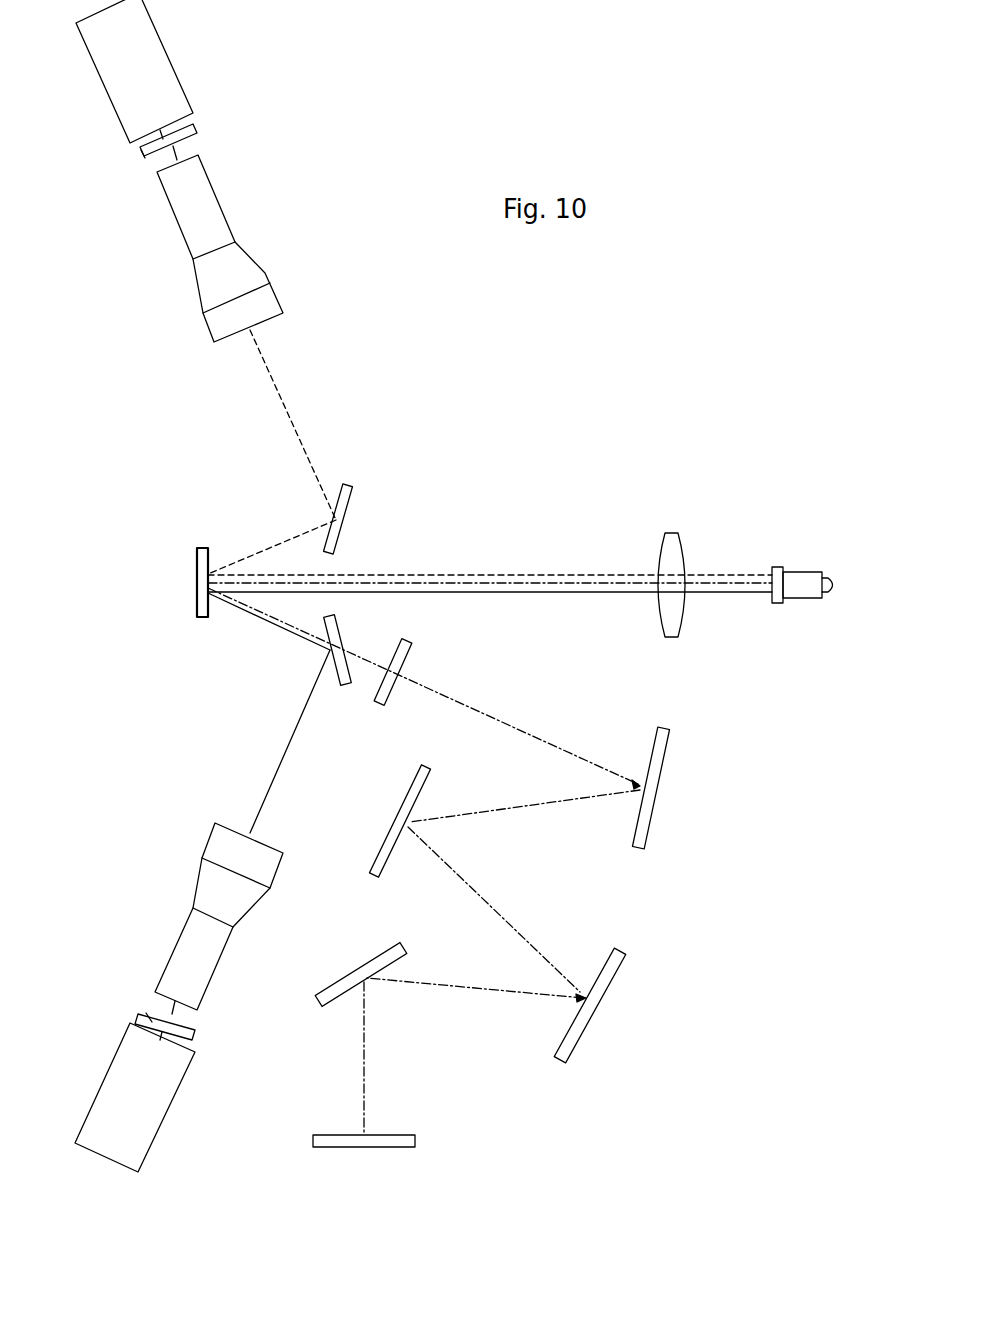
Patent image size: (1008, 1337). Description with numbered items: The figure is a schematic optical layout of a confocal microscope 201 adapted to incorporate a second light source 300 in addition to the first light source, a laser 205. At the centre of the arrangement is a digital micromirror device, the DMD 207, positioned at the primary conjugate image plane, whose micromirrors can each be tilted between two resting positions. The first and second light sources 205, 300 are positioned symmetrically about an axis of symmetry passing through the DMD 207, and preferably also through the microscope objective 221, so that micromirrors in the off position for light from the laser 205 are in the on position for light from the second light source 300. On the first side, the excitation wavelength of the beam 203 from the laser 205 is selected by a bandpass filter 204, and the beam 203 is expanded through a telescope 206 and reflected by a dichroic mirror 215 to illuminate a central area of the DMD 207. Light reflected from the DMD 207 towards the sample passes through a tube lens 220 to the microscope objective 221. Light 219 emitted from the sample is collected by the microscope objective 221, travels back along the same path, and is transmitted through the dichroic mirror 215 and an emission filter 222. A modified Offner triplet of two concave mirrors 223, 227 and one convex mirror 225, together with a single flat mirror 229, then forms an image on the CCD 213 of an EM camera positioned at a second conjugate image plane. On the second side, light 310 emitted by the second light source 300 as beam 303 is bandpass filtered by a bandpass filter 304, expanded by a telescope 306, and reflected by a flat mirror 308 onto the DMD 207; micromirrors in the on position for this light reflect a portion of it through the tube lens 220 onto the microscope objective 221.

The confocal microscope 201 is at (604, 516).
The beam 203 is at (170, 1017).
The bandpass filter 204 is at (150, 1012).
The laser 205 is at (127, 1100).
The telescope 206 is at (197, 882).
The digital micromirror device 207 is at (200, 585).
The CCD 213 is at (395, 1140).
The dichroic mirror 215 is at (330, 633).
The light 219 is at (737, 583).
The tube lens 220 is at (678, 565).
The microscope objective 221 is at (795, 588).
The emission filter 222 is at (403, 653).
The concave mirror 223 is at (655, 780).
The convex mirror 225 is at (388, 838).
The concave mirror 227 is at (600, 985).
The flat mirror 229 is at (353, 978).
The second light source 300 is at (152, 92).
The beam 303 is at (198, 145).
The bandpass filter 304 is at (143, 160).
The telescope 306 is at (220, 293).
The flat mirror 308 is at (343, 510).
The light 310 is at (278, 397).